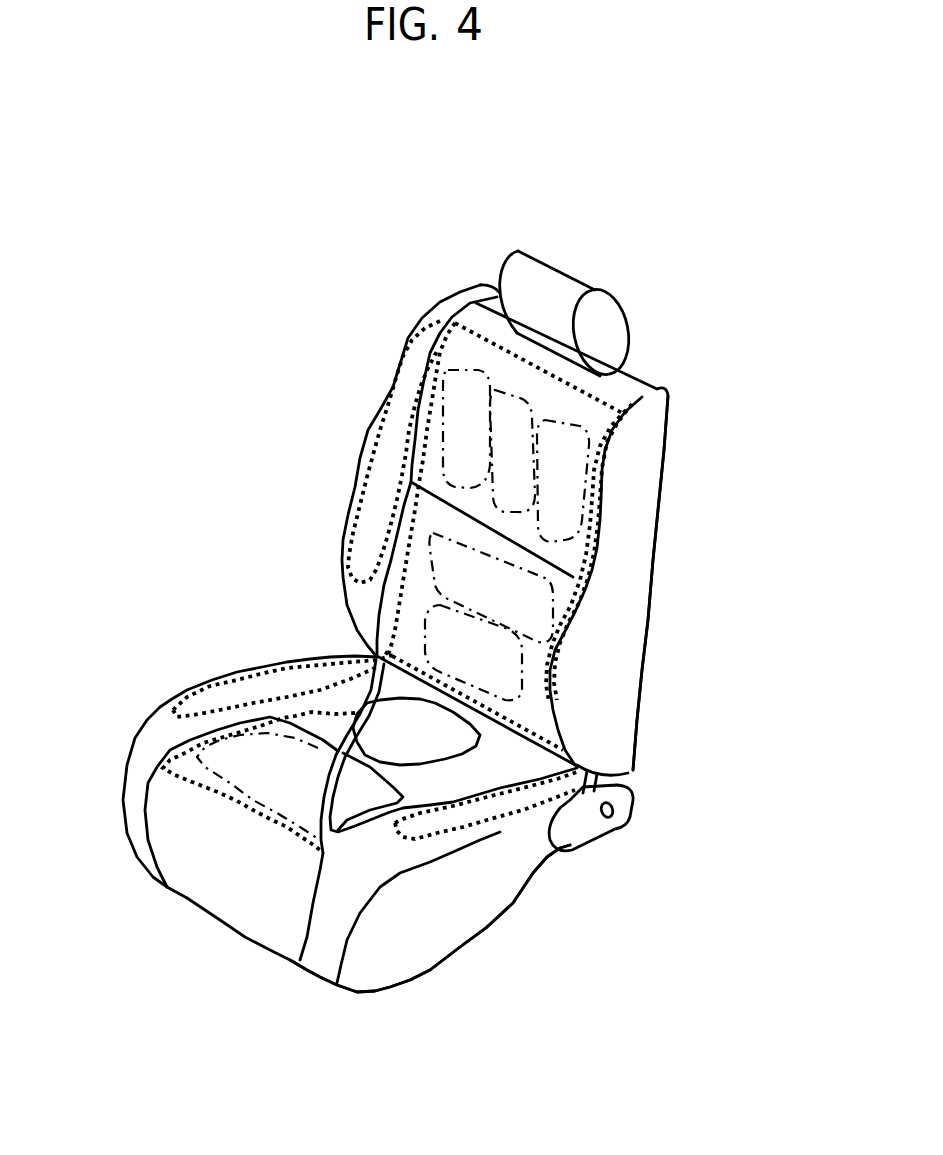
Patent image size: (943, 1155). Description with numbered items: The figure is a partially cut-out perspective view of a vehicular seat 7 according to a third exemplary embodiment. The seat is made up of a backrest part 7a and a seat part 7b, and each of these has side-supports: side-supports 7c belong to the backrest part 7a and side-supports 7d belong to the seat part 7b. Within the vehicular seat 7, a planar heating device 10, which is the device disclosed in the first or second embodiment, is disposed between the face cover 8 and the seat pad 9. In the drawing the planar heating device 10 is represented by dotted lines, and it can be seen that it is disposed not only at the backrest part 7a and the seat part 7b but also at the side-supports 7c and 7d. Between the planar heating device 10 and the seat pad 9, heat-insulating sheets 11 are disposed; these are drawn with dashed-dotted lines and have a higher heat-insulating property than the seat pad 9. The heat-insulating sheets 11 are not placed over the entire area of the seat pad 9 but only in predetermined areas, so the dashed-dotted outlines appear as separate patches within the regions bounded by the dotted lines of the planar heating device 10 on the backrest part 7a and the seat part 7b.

The vehicular seat 7 is at (642, 367).
The backrest part 7a is at (640, 473).
The seat part 7b is at (497, 900).
The side-support 7c is at (343, 545).
The side-support 7d is at (237, 675).
The face cover 8 is at (397, 557).
The seat pad 9 is at (477, 763).
The planar heating device 10 is at (433, 403).
The heat-insulating sheets 11 is at (465, 452).